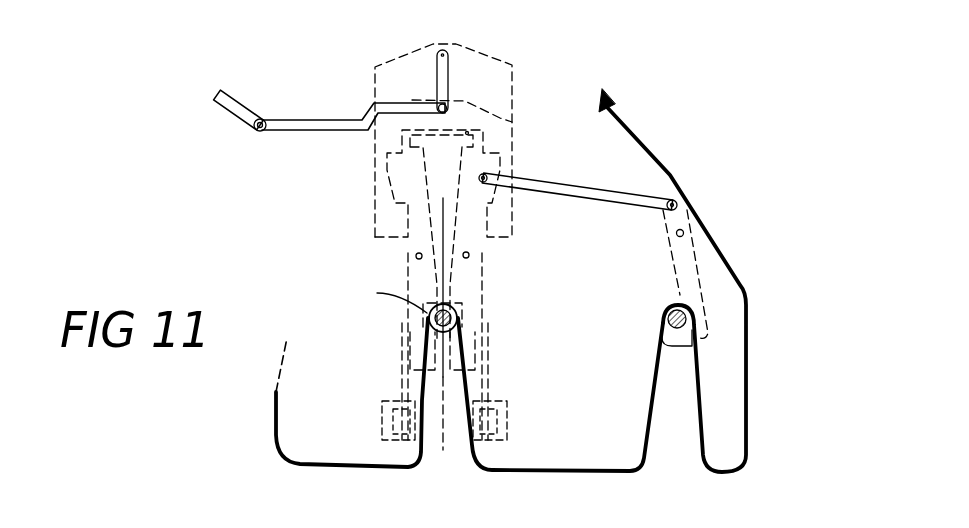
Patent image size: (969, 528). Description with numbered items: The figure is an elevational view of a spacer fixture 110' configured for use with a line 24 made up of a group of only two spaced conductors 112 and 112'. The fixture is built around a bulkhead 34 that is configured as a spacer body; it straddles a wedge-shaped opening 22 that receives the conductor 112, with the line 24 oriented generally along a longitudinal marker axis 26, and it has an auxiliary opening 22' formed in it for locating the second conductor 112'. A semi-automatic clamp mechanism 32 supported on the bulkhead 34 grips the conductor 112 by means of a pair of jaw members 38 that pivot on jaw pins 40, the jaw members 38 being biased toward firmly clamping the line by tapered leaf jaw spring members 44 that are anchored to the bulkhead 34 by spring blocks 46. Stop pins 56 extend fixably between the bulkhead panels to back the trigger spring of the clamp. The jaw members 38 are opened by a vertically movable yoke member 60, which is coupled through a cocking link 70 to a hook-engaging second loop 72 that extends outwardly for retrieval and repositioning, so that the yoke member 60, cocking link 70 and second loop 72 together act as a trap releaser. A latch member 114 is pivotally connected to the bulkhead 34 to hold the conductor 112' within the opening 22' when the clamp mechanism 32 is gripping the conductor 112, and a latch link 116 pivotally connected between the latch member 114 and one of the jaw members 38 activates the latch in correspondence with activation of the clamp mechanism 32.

The opening 22 is at (469, 408).
The auxiliary opening 22' is at (672, 292).
The line 24 is at (382, 298).
The longitudinal marker axis 26 is at (452, 306).
The clamp mechanism 32 is at (386, 351).
The bulkhead 34 is at (580, 389).
The jaw members 38 is at (482, 260).
The jaw pins 40 is at (410, 260).
The jaw spring members 44 is at (403, 388).
The spring block 46 is at (382, 437).
The stop pins 56 is at (467, 133).
The yoke member 60 is at (512, 65).
The cocking link 70 is at (300, 133).
The second loop 72 is at (228, 115).
The spacer fixture 110' is at (226, 271).
The conductor 112 is at (516, 324).
The conductor 112' is at (655, 274).
The latch member 114 is at (670, 347).
The latch link 116 is at (563, 177).